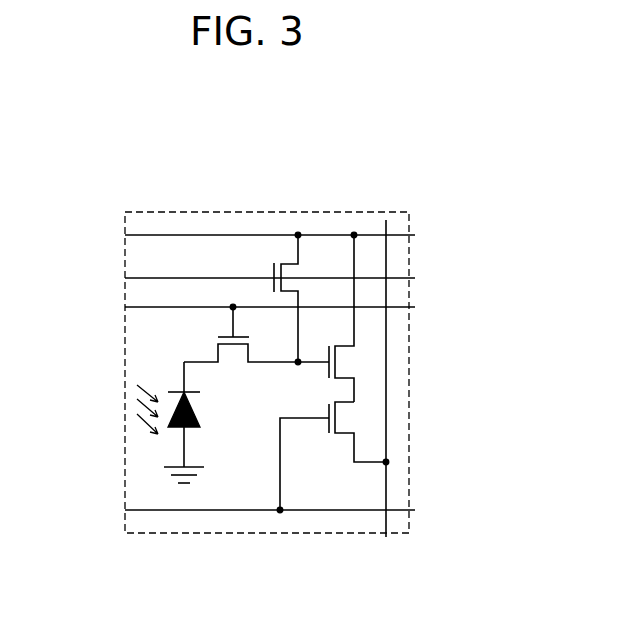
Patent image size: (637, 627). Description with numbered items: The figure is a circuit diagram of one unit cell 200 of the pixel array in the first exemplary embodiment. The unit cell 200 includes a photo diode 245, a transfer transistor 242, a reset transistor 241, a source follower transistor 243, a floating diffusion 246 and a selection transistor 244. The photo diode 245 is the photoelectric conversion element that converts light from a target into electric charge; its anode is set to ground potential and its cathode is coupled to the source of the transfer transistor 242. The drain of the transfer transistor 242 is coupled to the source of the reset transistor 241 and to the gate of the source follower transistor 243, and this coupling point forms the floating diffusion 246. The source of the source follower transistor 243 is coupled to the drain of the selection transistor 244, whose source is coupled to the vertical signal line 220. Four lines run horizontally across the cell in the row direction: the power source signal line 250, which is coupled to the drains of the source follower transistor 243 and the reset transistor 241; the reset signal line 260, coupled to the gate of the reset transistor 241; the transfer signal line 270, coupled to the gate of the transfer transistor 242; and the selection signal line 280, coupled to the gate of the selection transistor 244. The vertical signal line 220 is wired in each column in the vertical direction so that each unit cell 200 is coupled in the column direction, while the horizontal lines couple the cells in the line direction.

The unit cell 200 is at (485, 120).
The vertical signal line 220 is at (386, 522).
The reset transistor 241 is at (268, 271).
The transfer transistor 242 is at (217, 352).
The source follower transistor 243 is at (343, 363).
The selection transistor 244 is at (343, 418).
The photo diode 245 is at (200, 405).
The floating diffusion 246 is at (298, 383).
The power source signal line 250 is at (415, 237).
The reset signal line 260 is at (415, 280).
The transfer signal line 270 is at (415, 309).
The selection signal line 280 is at (136, 510).